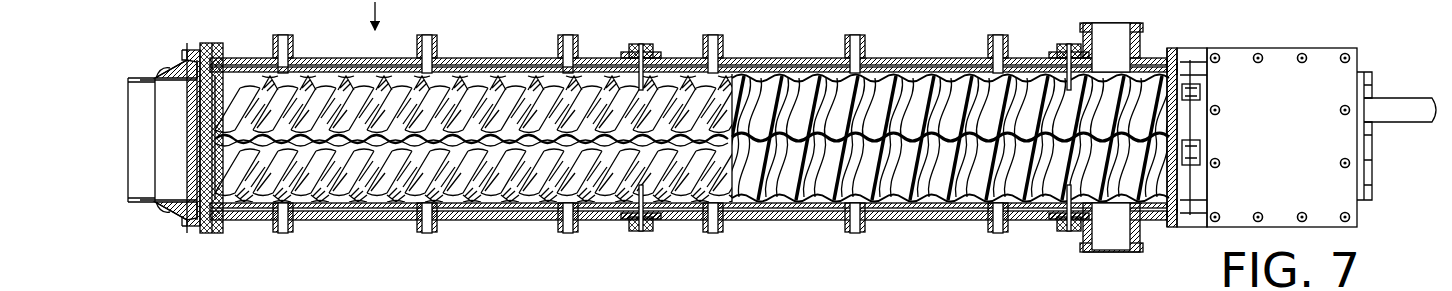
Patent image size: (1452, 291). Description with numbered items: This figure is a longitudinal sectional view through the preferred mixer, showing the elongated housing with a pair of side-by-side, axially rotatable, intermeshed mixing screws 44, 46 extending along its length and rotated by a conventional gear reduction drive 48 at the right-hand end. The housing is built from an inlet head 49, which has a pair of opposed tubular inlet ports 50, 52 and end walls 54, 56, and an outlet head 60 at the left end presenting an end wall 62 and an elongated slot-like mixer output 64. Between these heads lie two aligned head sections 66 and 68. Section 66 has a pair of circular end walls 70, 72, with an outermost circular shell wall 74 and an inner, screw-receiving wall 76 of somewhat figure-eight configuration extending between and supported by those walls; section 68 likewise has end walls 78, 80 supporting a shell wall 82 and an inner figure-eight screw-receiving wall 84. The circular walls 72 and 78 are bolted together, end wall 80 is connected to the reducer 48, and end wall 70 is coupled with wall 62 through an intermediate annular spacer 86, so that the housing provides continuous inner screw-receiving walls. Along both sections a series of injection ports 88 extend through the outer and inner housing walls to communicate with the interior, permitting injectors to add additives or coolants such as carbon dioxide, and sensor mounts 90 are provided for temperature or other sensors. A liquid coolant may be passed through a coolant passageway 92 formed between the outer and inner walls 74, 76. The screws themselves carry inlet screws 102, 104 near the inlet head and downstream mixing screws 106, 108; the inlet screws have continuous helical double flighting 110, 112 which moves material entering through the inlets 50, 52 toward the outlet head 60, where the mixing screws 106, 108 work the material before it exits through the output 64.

The mixing screw 44 is at (821, 70).
The mixing screw 46 is at (806, 202).
The gear reduction drive 48 is at (1253, 125).
The inlet head 49 is at (1172, 43).
The inlet port 50 is at (1121, 246).
The inlet port 52 is at (1140, 62).
The end wall 54 is at (1072, 44).
The end wall 56 is at (1172, 232).
The outlet head 60 is at (160, 68).
The end wall 62 is at (206, 142).
The mixer output 64 is at (134, 176).
The head section 66 is at (360, 233).
The head section 68 is at (958, 230).
The end wall 70 is at (218, 234).
The end wall 72 is at (636, 233).
The shell wall 74 is at (468, 222).
The screw-receiving wall 76 is at (520, 58).
The end wall 78 is at (648, 233).
The end wall 80 is at (1068, 233).
The shell wall 82 is at (877, 58).
The screw-receiving wall 84 is at (898, 57).
The annular spacer 86 is at (206, 234).
The injection port 88 is at (843, 233).
The sensor mount 90 is at (438, 57).
The coolant passageway 92 is at (273, 234).
The inlet screw 102 is at (950, 90).
The inlet screw 104 is at (985, 230).
The mixing screw 106 is at (600, 92).
The mixing screw 108 is at (555, 182).
The helical double flighting 110 is at (1195, 95).
The helical double flighting 112 is at (1195, 152).